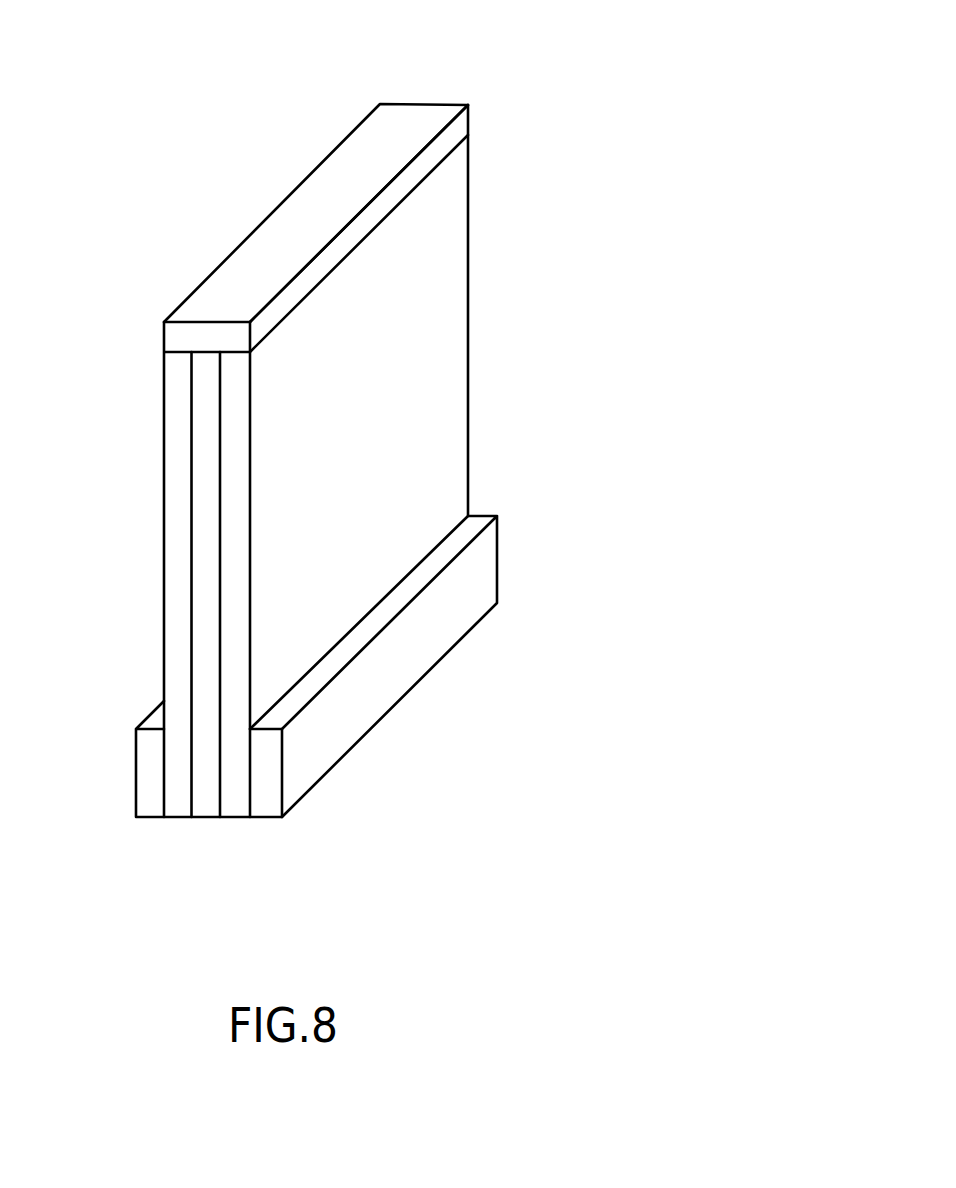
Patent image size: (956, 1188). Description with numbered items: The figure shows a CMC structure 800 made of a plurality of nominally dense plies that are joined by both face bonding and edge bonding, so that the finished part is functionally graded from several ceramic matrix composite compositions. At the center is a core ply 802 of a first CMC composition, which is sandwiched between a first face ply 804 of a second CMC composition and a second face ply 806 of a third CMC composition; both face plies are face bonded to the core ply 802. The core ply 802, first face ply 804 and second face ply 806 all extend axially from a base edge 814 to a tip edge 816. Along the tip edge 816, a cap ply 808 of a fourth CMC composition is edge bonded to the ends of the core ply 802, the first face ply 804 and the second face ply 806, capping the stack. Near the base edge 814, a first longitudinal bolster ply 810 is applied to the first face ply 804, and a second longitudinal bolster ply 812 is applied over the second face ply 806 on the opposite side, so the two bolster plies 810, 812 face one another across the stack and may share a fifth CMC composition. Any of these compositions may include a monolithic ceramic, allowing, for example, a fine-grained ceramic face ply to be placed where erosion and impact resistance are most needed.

The CMC structure 800 is at (518, 72).
The core ply 802 is at (203, 805).
The first face ply 804 is at (442, 363).
The second face ply 806 is at (177, 453).
The cap ply 808 is at (463, 122).
The first longitudinal bolster ply 810 is at (353, 747).
The second longitudinal bolster ply 812 is at (145, 762).
The base edge 814 is at (280, 825).
The tip edge 816 is at (125, 347).